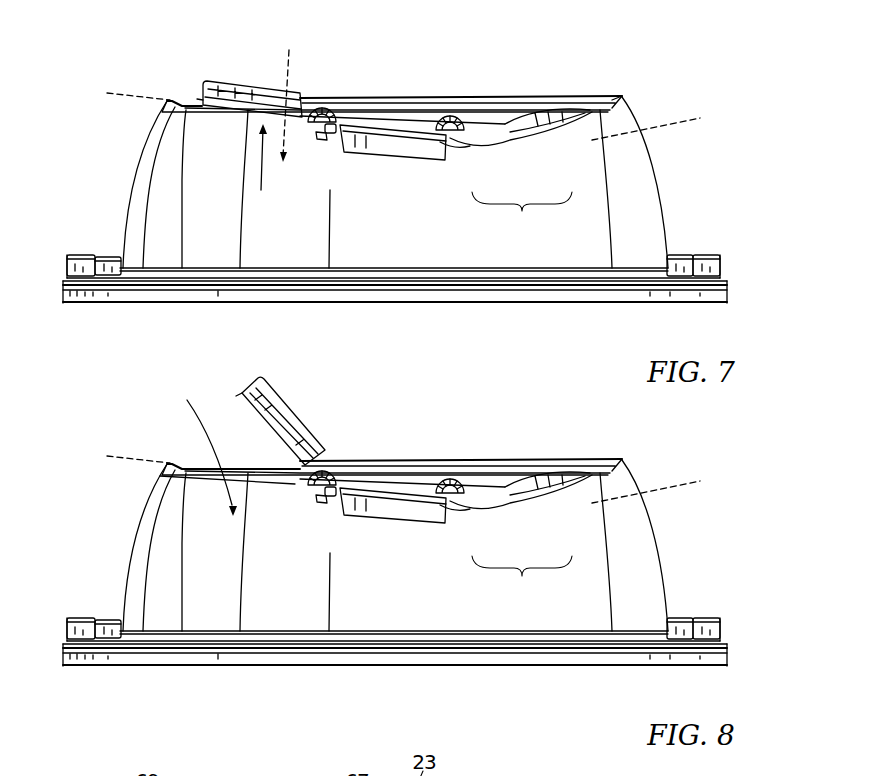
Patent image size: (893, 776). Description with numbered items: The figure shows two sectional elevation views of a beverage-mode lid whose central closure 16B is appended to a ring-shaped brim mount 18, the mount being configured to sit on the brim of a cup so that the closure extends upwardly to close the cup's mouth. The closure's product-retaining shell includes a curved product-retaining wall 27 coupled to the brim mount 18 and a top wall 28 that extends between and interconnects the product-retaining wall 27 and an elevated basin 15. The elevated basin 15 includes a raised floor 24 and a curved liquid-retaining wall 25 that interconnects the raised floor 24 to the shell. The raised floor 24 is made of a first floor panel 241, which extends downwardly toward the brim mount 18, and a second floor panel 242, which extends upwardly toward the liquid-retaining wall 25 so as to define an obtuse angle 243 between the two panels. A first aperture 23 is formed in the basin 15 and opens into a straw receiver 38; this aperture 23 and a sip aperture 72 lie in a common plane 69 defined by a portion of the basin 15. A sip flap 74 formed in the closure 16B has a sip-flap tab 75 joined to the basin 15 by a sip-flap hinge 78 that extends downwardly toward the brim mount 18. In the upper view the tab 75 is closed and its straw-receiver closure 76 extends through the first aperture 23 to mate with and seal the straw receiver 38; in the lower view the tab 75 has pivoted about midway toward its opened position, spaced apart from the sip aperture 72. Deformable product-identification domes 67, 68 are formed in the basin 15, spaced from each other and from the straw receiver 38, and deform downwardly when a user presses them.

In FIG. 7, the elevated basin 15 is at (522, 217).
In FIG. 8, the elevated basin 15 is at (582, 602).
In FIG. 7, the central closure 16B is at (726, 127).
In FIG. 7, the ring-shaped brim mount 18 is at (735, 276).
In FIG. 8, the ring-shaped brim mount 18 is at (735, 639).
In FIG. 7, the first aperture 23 is at (388, 153).
In FIG. 8, the first aperture 23 is at (375, 478).
In FIG. 7, the raised floor 24 is at (475, 160).
In FIG. 8, the raised floor 24 is at (521, 540).
In FIG. 7, the first floor panel 241 is at (452, 150).
In FIG. 8, the first floor panel 241 is at (460, 507).
In FIG. 7, the second floor panel 242 is at (507, 136).
In FIG. 8, the second floor panel 242 is at (537, 500).
In FIG. 7, the obtuse angle 243 is at (138, 90).
In FIG. 7, the curved liquid-retaining wall 25 is at (537, 140).
In FIG. 8, the curved liquid-retaining wall 25 is at (587, 493).
In FIG. 7, the curved product-retaining wall 27 is at (664, 172).
In FIG. 8, the curved product-retaining wall 27 is at (662, 566).
In FIG. 7, the top wall 28 is at (627, 94).
In FIG. 8, the top wall 28 is at (627, 458).
In FIG. 7, the straw receiver 38 is at (352, 165).
In FIG. 8, the straw receiver 38 is at (353, 527).
In FIG. 7, the deformable product-identification dome 67 is at (327, 110).
In FIG. 8, the deformable product-identification dome 67 is at (335, 478).
In FIG. 7, the deformable product-identification dome 68 is at (434, 122).
In FIG. 8, the deformable product-identification dome 68 is at (437, 490).
In FIG. 7, the common plane 69 is at (122, 92).
In FIG. 8, the common plane 69 is at (122, 455).
In FIG. 7, the sip aperture 72 is at (168, 108).
In FIG. 8, the sip aperture 72 is at (172, 480).
In FIG. 7, the sip flap 74 is at (269, 131).
In FIG. 8, the sip flap 74 is at (275, 368).
In FIG. 7, the sip-flap tab 75 is at (200, 112).
In FIG. 8, the sip-flap tab 75 is at (237, 395).
In FIG. 7, the straw-receiver closure 76 is at (237, 82).
In FIG. 8, the straw-receiver closure 76 is at (290, 408).
In FIG. 7, the sip-flap hinge 78 is at (322, 140).
In FIG. 8, the sip-flap hinge 78 is at (323, 497).